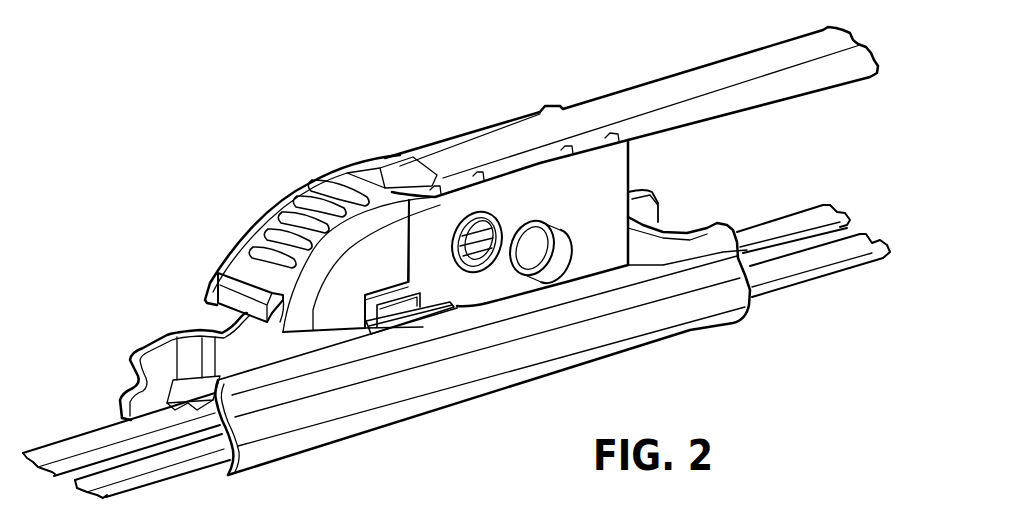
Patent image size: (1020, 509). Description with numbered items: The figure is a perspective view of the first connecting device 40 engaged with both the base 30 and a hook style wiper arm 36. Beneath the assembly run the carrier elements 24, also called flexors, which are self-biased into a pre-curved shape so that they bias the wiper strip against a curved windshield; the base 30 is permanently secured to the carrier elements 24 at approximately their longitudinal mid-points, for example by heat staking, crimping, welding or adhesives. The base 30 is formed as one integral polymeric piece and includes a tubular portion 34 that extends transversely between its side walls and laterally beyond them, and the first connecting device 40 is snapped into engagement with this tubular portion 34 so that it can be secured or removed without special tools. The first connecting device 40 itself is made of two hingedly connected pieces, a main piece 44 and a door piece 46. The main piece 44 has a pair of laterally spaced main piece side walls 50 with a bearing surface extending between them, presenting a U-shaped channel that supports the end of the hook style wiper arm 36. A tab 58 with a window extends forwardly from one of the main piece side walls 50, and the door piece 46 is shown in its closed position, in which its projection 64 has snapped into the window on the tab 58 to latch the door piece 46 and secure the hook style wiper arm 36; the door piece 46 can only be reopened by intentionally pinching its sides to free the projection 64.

The carrier elements 24 is at (838, 253).
The base 30 is at (435, 332).
The tubular portion 34 is at (480, 235).
The hook style wiper arm 36 is at (653, 98).
The first connecting device 40 is at (243, 239).
The main piece 44 is at (603, 177).
The door piece 46 is at (315, 212).
The main piece side walls 50 is at (597, 238).
The tab 58 is at (380, 293).
The projection 64 is at (410, 305).